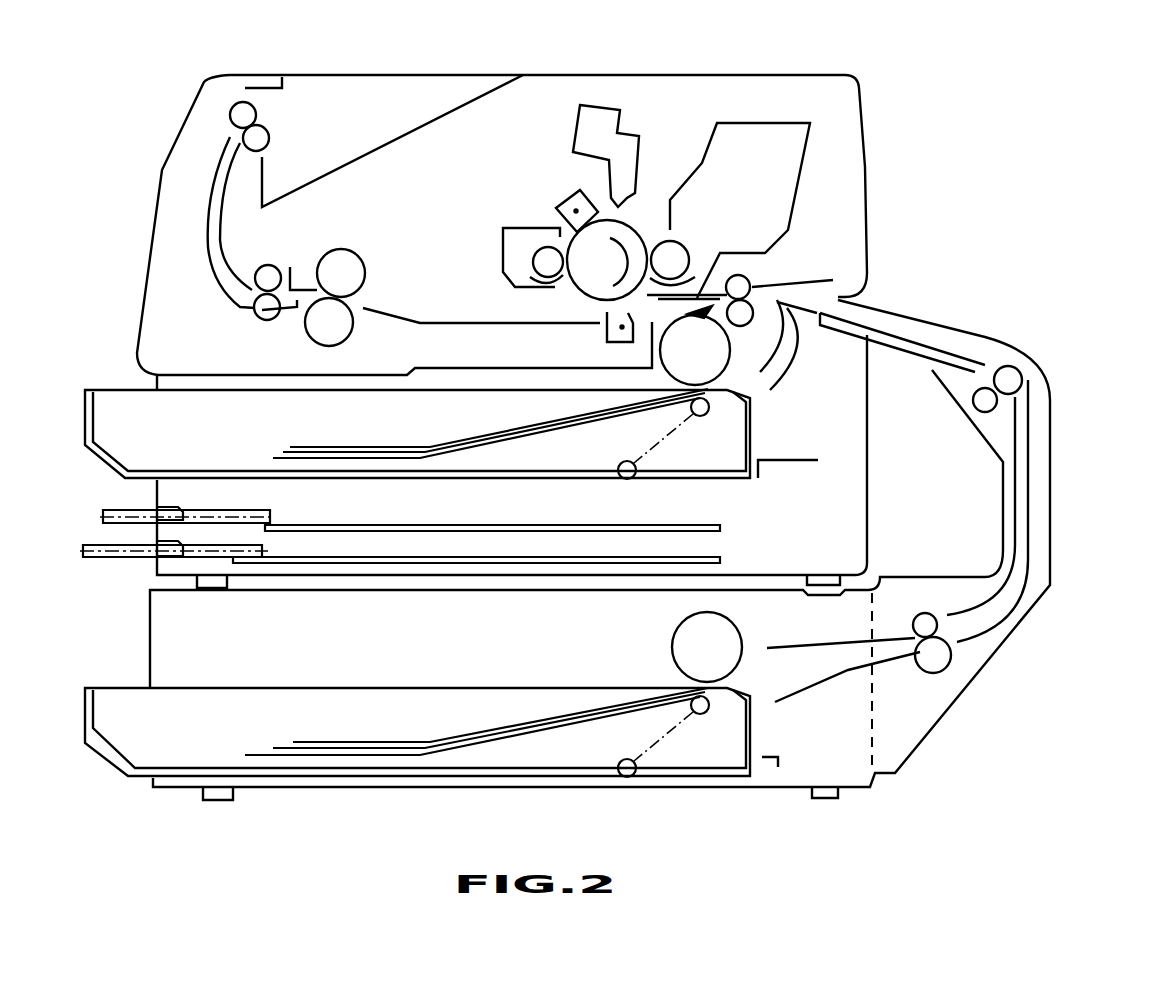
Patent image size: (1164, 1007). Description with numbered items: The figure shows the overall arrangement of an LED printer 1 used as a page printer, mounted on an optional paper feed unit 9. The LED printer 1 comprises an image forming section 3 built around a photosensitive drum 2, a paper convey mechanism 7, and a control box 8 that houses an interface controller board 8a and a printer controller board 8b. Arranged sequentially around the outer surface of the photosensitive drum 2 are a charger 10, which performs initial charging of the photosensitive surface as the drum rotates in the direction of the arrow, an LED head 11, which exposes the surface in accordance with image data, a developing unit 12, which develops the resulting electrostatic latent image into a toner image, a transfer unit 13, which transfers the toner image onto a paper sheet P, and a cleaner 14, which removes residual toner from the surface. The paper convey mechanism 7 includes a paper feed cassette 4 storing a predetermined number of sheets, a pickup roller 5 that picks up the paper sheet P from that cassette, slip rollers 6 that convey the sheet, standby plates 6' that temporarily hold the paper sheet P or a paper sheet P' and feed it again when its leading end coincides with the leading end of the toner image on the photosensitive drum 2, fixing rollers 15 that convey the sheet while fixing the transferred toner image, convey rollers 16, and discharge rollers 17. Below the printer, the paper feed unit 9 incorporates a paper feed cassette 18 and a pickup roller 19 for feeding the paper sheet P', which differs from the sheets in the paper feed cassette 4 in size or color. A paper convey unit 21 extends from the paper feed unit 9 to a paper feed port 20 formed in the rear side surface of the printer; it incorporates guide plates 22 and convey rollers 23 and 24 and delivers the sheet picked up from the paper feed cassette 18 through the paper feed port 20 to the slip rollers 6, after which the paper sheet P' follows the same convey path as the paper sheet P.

The LED printer 1 is at (877, 95).
The photosensitive drum 2 is at (630, 230).
The image forming section 3 is at (572, 170).
The paper feed cassette 4 is at (235, 408).
The pickup roller 5 is at (727, 348).
The slip rollers 6 is at (779, 275).
The standby plates 6' is at (687, 271).
The paper convey mechanism 7 is at (500, 335).
The control box 8 is at (793, 484).
The interface controller board 8a is at (628, 522).
The printer controller board 8b is at (707, 553).
The paper feed unit 9 is at (468, 782).
The charger 10 is at (563, 207).
The LED head 11 is at (613, 125).
The developing unit 12 is at (793, 179).
The transfer unit 13 is at (607, 337).
The cleaner 14 is at (502, 257).
The fixing rollers 15 is at (352, 322).
The convey rollers 16 is at (258, 300).
The discharge rollers 17 is at (258, 108).
The paper feed cassette 18 is at (358, 710).
The pickup roller 19 is at (730, 636).
The paper feed port 20 is at (835, 286).
The paper convey unit 21 is at (1035, 556).
The guide plates 22 is at (1018, 492).
The convey rollers 23 is at (940, 625).
The convey rollers 24 is at (985, 392).
The paper sheet P is at (491, 434).
The paper sheet P' is at (477, 732).